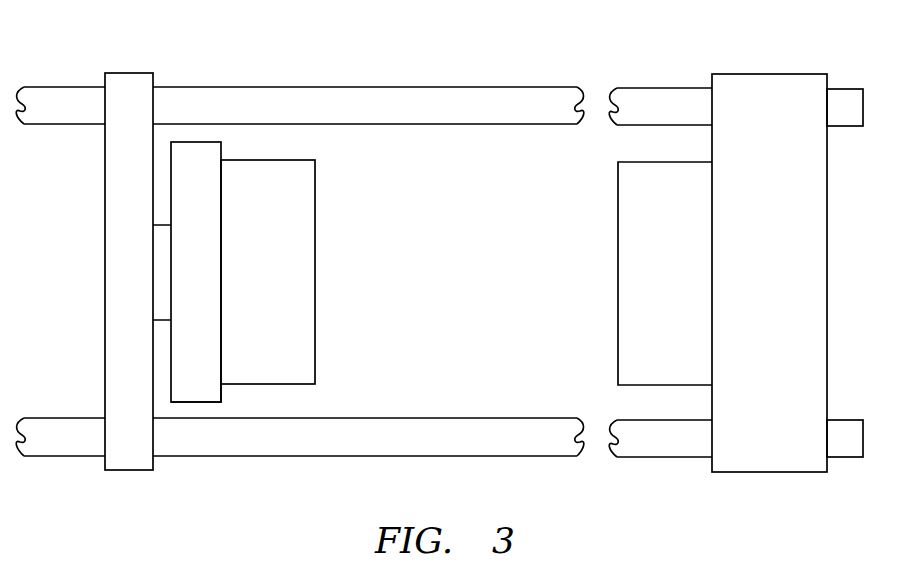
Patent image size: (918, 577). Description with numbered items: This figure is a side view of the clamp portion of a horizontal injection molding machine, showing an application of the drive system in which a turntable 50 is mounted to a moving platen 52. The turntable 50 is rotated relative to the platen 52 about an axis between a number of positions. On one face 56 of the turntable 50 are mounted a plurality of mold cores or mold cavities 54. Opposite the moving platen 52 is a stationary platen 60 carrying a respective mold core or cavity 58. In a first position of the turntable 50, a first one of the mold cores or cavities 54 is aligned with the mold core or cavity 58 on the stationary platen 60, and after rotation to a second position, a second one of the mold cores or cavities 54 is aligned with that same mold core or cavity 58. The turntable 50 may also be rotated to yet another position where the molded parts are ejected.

The turntable 50 is at (203, 150).
The moving platen 52 is at (130, 72).
The mold cores or mold cavities 54 is at (300, 203).
The face 56 is at (222, 397).
The mold core or cavity 58 is at (678, 290).
The stationary platen 60 is at (810, 243).